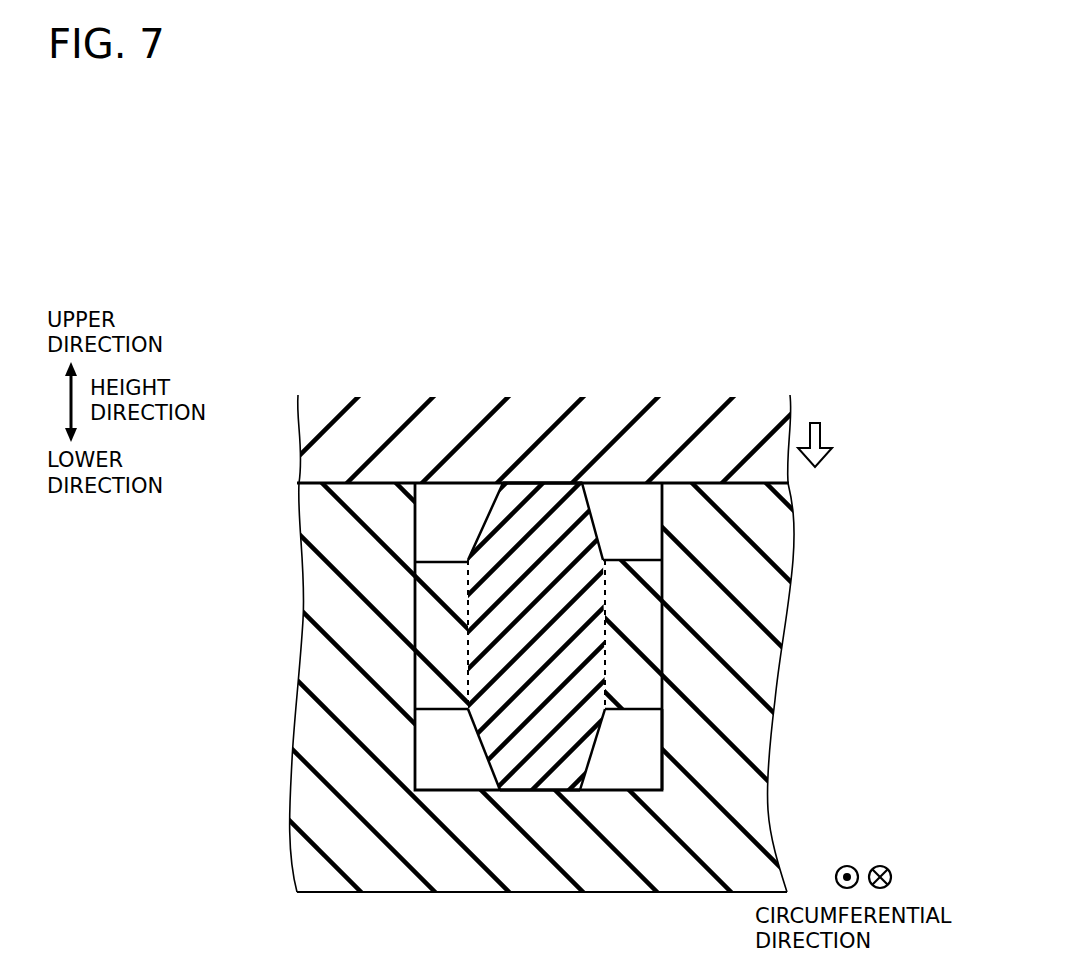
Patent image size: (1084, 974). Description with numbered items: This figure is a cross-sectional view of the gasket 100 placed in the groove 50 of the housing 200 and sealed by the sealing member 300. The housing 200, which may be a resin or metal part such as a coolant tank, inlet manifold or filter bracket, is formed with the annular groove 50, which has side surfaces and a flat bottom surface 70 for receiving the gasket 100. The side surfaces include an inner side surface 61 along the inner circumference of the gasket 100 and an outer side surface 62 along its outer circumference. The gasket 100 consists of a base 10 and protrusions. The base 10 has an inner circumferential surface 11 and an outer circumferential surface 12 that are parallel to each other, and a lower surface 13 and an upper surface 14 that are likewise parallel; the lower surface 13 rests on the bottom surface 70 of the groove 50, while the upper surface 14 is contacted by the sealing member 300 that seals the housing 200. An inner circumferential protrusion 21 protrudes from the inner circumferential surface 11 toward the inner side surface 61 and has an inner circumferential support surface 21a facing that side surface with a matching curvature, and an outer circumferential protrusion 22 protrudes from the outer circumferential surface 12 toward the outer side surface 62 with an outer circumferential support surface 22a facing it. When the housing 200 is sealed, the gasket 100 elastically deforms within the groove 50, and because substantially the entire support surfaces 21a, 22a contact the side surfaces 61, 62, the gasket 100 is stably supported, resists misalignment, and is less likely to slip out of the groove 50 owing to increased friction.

The sealing member 300 is at (312, 427).
The housing 200 is at (787, 562).
The gasket 100 is at (598, 508).
The base 10 is at (528, 493).
The upper surface 14 is at (518, 495).
The lower surface 13 is at (538, 790).
The outer circumferential surface 12 is at (468, 580).
The inner circumferential surface 11 is at (605, 583).
The groove 50 is at (650, 730).
The outer circumferential protrusion 22 is at (427, 672).
The outer circumferential support surface 22a is at (418, 632).
The inner circumferential protrusion 21 is at (647, 660).
The inner circumferential support surface 21a is at (663, 623).
The inner side surface 61 is at (663, 528).
The outer side surface 62 is at (417, 760).
The bottom surface 70 is at (643, 790).